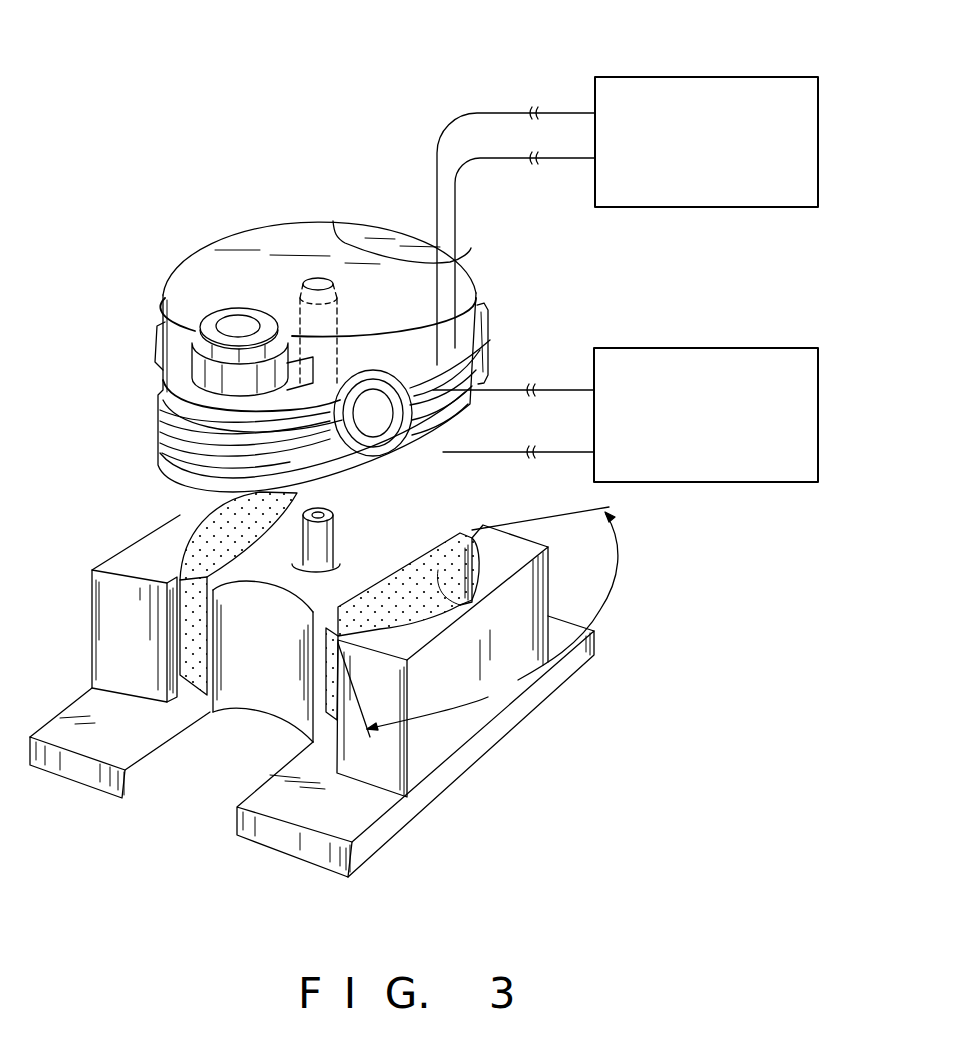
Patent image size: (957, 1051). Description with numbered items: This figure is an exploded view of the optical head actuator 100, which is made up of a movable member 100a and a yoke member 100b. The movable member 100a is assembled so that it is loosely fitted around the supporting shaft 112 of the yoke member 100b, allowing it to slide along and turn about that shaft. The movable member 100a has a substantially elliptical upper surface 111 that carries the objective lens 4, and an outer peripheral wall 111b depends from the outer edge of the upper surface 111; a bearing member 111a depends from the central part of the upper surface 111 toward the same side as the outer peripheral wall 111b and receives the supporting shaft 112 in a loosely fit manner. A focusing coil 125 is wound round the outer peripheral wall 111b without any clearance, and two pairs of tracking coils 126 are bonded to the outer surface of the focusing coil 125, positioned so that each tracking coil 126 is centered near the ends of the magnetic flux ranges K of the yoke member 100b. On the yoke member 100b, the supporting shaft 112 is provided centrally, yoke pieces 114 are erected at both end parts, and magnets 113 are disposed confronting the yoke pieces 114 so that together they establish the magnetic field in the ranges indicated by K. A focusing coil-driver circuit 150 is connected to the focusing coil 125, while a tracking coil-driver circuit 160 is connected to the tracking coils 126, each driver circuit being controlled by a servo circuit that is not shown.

The optical head actuator 100 is at (668, 510).
The movable member 100a is at (205, 229).
The yoke member 100b is at (558, 719).
The objective lens 4 is at (237, 320).
The upper surface 111 is at (276, 238).
The bearing member 111a is at (340, 322).
The outer peripheral wall 111b is at (480, 310).
The supporting shaft 112 is at (323, 540).
The magnets 113 is at (200, 547).
The yoke pieces 114 is at (470, 743).
The focusing coil 125 is at (440, 406).
The tracking coils 126 is at (383, 453).
The focusing coil-driver circuit 150 is at (732, 78).
The tracking coil-driver circuit 160 is at (725, 352).
The magnetic flux ranges K is at (478, 622).